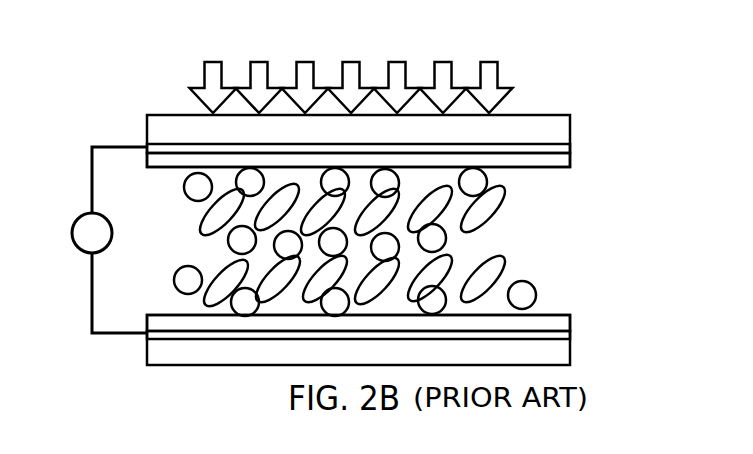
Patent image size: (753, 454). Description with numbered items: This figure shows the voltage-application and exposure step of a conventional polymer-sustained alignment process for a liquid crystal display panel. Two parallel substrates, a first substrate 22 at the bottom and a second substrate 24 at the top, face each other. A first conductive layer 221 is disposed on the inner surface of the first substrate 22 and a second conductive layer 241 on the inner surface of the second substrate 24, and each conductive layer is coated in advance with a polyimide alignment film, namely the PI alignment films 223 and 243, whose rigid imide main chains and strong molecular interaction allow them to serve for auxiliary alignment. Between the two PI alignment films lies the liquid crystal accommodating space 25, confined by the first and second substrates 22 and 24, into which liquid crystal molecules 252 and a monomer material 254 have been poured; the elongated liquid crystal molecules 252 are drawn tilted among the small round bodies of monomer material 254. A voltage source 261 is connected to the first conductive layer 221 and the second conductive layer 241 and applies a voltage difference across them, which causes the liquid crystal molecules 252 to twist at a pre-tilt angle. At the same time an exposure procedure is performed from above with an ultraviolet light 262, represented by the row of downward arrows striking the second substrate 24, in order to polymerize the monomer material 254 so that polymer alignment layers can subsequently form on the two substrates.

The first substrate 22 is at (545, 352).
The first conductive layer 221 is at (543, 334).
The polyimide alignment film 223 is at (543, 322).
The second substrate 24 is at (550, 128).
The second conductive layer 241 is at (548, 147).
The polyimide alignment film 243 is at (548, 159).
The liquid crystal accommodating space 25 is at (361, 242).
The liquid crystal molecules 252 is at (210, 220).
The monomer material 254 is at (191, 186).
The voltage source 261 is at (70, 232).
The ultraviolet light 262 is at (536, 73).